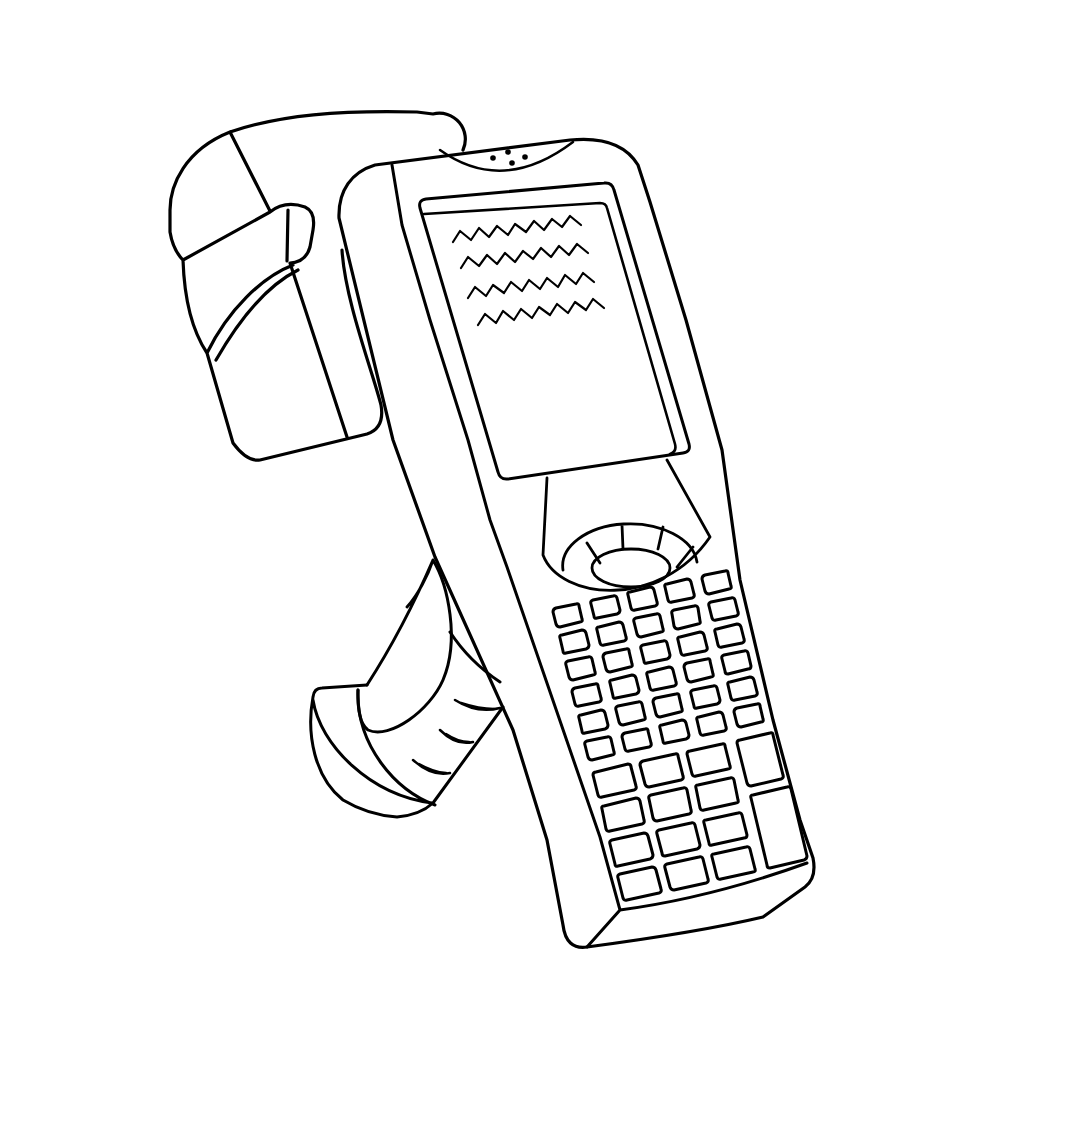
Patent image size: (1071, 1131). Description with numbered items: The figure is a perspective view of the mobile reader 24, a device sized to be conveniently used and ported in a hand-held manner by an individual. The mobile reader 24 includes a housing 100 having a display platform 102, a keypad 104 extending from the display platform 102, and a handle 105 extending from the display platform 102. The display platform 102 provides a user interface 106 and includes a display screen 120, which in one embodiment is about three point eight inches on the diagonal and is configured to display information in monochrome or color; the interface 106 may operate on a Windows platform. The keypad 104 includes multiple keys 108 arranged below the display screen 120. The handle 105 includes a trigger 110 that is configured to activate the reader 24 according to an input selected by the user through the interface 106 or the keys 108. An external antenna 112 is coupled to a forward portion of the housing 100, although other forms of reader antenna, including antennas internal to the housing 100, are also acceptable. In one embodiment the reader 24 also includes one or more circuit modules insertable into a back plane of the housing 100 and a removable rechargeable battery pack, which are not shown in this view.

The mobile reader 24 is at (660, 124).
The housing 100 is at (748, 441).
The display platform 102 is at (653, 258).
The keypad 104 is at (733, 647).
The handle 105 is at (337, 785).
The user interface 106 is at (580, 245).
The keys 108 is at (700, 753).
The trigger 110 is at (427, 562).
The external antenna 112 is at (200, 142).
The display screen 120 is at (608, 395).